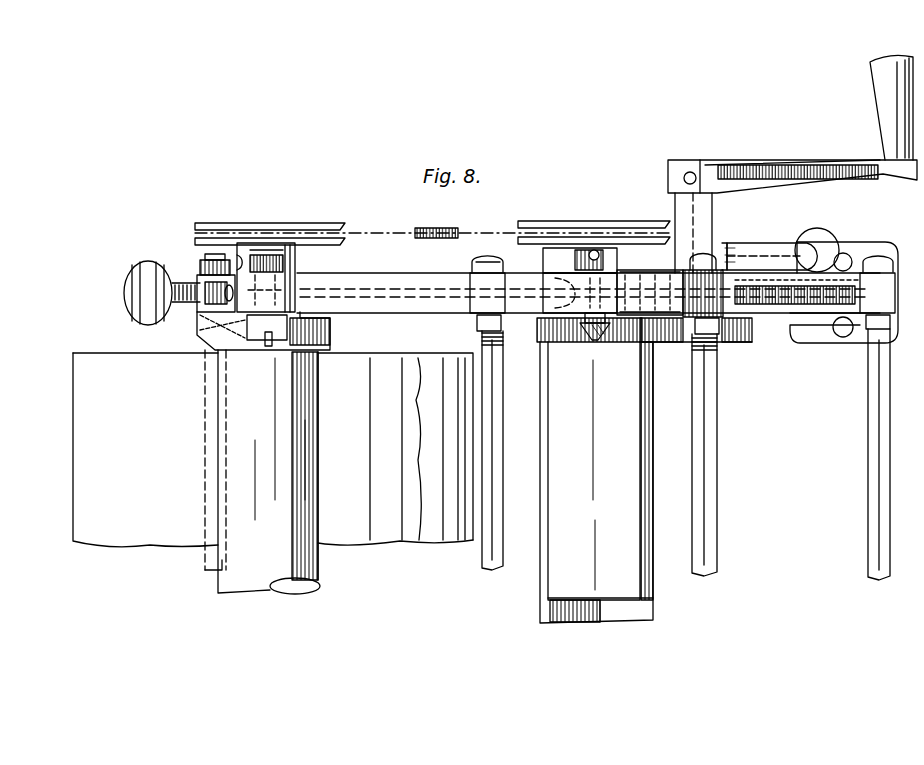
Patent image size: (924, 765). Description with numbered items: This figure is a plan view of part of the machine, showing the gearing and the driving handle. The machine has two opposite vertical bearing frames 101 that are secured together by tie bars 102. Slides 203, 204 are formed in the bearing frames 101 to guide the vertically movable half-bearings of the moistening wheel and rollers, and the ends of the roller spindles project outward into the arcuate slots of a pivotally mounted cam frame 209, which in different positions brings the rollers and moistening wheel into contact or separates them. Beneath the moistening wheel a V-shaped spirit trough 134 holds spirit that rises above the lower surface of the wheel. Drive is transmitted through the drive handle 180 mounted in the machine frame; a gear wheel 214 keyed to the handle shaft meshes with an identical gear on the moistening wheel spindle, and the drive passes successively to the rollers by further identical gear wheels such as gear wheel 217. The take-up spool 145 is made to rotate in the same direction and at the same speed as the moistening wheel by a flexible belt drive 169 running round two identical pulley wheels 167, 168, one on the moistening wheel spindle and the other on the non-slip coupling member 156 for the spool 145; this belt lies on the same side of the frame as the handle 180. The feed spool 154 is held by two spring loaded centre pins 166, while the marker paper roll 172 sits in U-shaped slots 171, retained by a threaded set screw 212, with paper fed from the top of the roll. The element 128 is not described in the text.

The vertical bearing frames 101 is at (348, 273).
The tie bars 102 is at (207, 402).
The end clamp member 128 is at (770, 255).
The spirit trough 134 is at (553, 617).
The take-up spool 145 is at (233, 368).
The feed spool 154 is at (570, 378).
The coupling member 156 is at (253, 329).
The spring loaded centre pins 166 is at (600, 328).
The pulley wheel 167 is at (592, 262).
The pulley wheel 168 is at (280, 272).
The flexible belt drive 169 is at (350, 224).
The U-shaped slots 171 is at (210, 300).
The marker paper roll 172 is at (92, 362).
The drive handle 180 is at (680, 175).
The slide 203 is at (570, 240).
The slide 204 is at (622, 284).
The cam frame 209 is at (718, 244).
The threaded set screw 212 is at (183, 285).
The gear wheel 214 is at (736, 343).
The gear wheel 217 is at (555, 318).